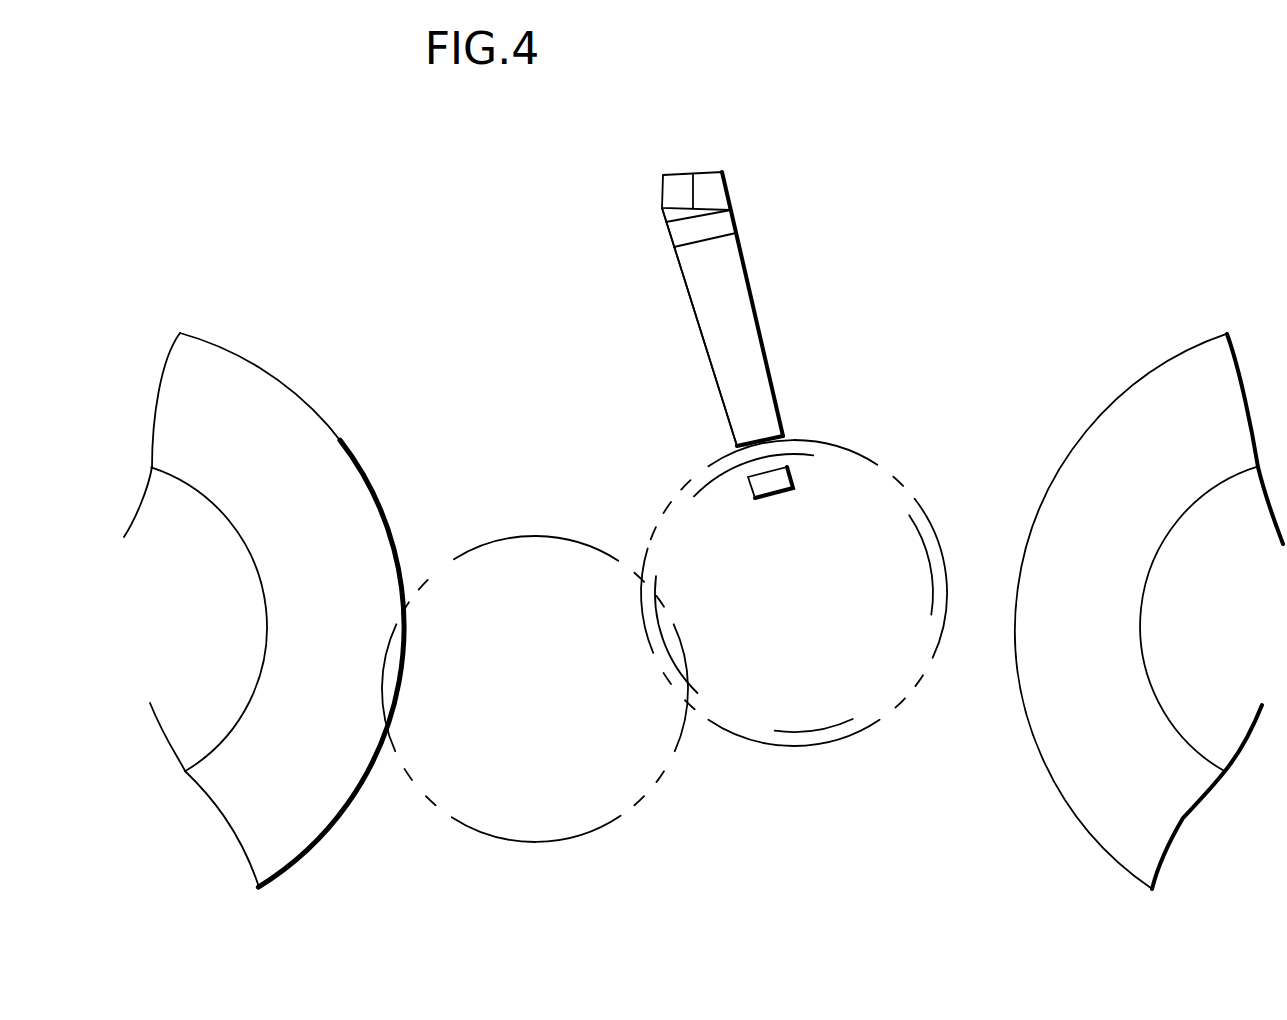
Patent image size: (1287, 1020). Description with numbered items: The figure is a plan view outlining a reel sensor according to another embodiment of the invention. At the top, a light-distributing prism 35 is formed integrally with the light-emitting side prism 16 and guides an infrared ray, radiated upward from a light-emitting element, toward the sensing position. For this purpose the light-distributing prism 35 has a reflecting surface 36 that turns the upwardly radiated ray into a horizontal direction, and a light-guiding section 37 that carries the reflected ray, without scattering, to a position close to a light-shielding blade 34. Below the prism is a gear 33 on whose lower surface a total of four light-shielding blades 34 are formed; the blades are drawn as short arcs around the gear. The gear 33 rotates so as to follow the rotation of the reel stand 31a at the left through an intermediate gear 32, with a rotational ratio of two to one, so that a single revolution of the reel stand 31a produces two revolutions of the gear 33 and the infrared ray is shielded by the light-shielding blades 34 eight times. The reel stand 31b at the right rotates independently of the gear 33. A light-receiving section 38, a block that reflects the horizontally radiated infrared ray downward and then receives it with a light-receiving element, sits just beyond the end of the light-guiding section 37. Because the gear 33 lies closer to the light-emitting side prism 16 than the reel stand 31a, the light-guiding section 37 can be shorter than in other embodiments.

The light-emitting side prism 16 is at (680, 175).
The reel stand 31a is at (318, 846).
The reel stand 31b is at (1096, 848).
The gear 32 is at (469, 829).
The gear 33 is at (767, 746).
The light-shielding blades 34 is at (711, 487).
The light-distributing prism 35 is at (748, 270).
The reflecting surface 36 is at (680, 232).
The light-guiding section 37 is at (702, 308).
The light-receiving section 38 is at (795, 480).